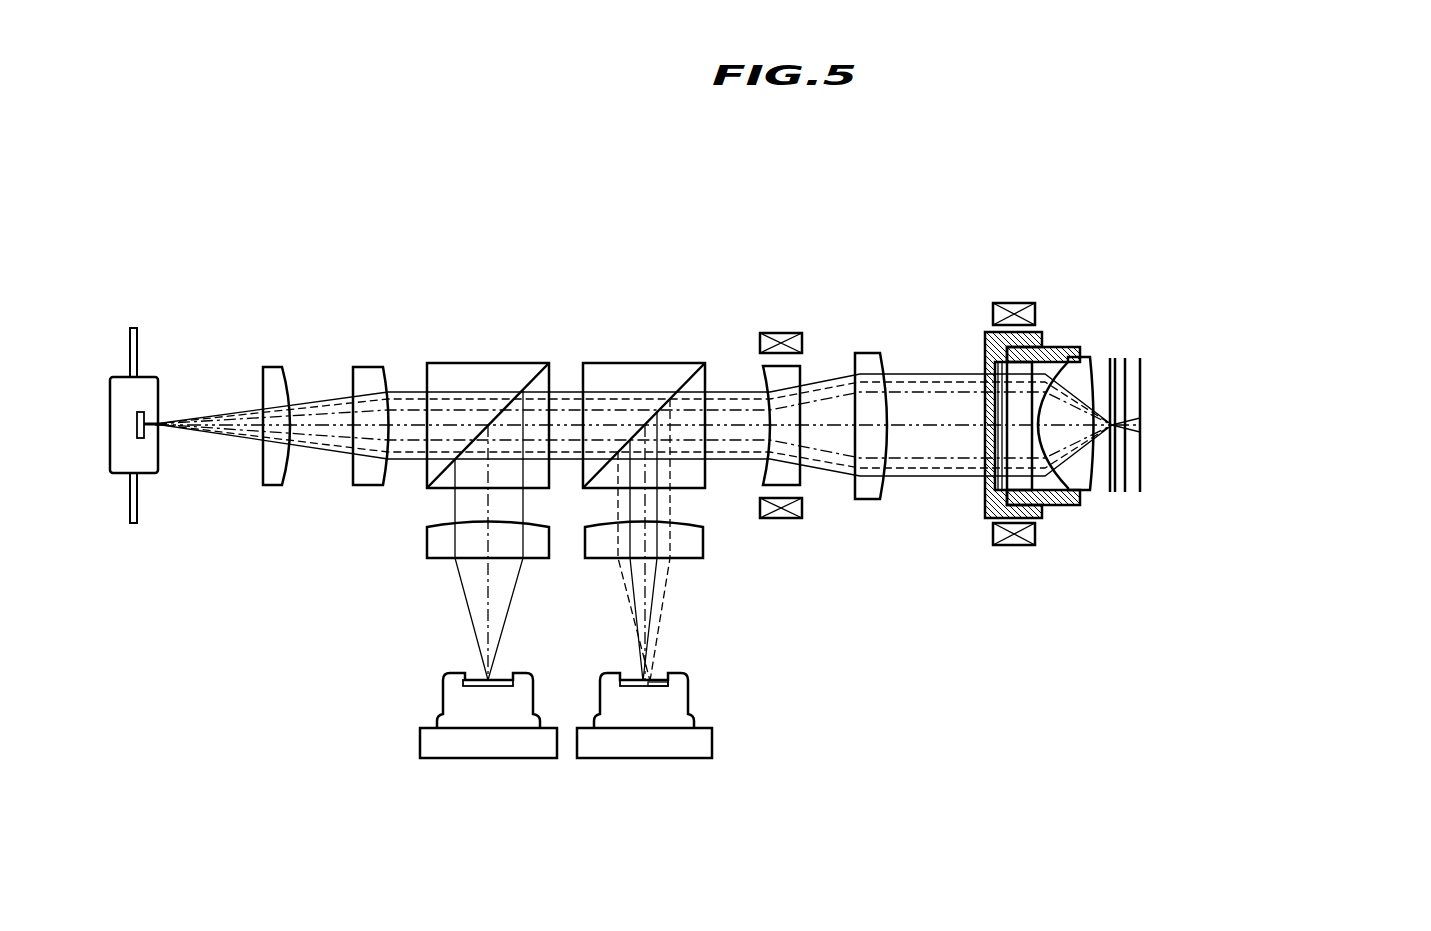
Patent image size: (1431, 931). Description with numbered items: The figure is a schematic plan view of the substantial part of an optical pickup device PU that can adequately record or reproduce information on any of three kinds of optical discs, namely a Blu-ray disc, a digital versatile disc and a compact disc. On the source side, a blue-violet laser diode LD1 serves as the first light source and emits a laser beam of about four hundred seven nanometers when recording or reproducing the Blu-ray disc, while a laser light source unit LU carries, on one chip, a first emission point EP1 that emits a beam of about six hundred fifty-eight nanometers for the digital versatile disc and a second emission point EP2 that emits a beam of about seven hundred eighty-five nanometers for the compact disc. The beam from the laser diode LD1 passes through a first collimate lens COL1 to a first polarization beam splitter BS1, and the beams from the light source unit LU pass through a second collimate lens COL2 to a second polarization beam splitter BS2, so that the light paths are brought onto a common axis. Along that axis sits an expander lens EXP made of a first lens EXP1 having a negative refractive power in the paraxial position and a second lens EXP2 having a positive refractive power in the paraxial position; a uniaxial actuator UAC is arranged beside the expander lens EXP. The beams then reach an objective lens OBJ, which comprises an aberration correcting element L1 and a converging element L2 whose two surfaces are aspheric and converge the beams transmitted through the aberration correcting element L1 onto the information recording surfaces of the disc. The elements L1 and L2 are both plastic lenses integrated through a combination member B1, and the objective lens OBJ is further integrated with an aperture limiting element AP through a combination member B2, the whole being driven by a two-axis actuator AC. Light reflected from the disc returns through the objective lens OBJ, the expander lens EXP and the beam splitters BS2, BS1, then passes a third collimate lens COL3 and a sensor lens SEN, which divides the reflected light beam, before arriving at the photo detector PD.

The optical pickup device PU is at (905, 246).
The BD/DVD/CD photo detector PD is at (155, 378).
The sensor lens SEN is at (273, 372).
The third collimate lens COL3 is at (368, 372).
The first polarization beam splitter BS1 is at (449, 374).
The second polarization beam splitter BS2 is at (644, 374).
The first collimate lens COL1 is at (444, 562).
The second collimate lens COL2 is at (604, 562).
The blue-violet laser diode LD1 is at (494, 762).
The DVD/CD laser light source unit LU is at (668, 762).
The first emission point EP1 is at (648, 683).
The second emission point EP2 is at (662, 688).
The uniaxial actuator UAC is at (786, 332).
The expander lens EXP is at (917, 582).
The first lens EXP1 is at (800, 487).
The second lens EXP2 is at (869, 500).
The aperture limiting element AP is at (987, 488).
The combination member B2 is at (982, 338).
The two-axis actuator AC is at (1020, 302).
The combination member B1 is at (1062, 345).
The aberration correcting element L1 is at (1025, 488).
The converging element L2 is at (1086, 492).
The objective lens OBJ is at (1117, 596).